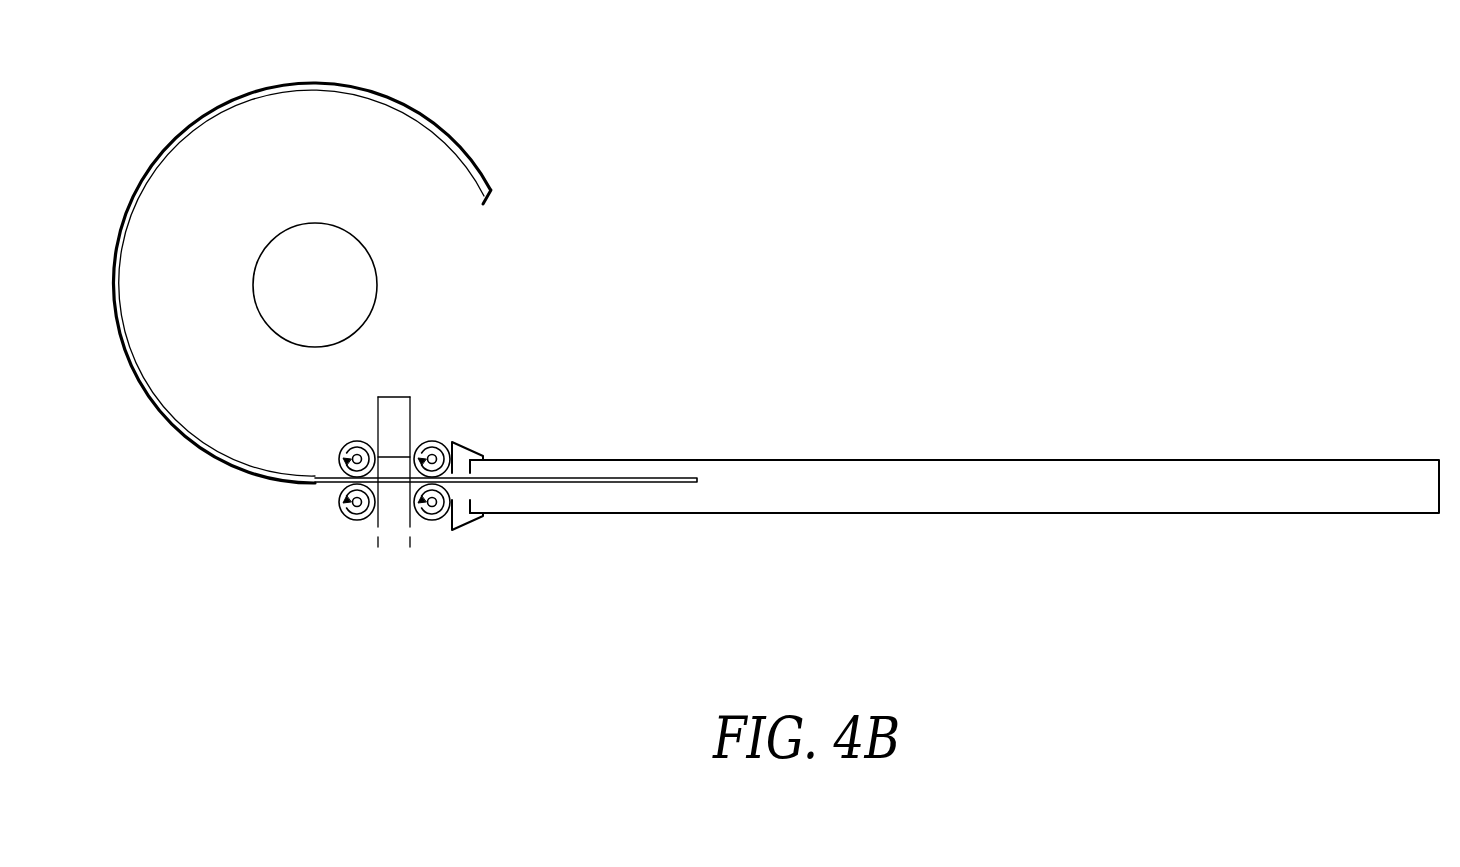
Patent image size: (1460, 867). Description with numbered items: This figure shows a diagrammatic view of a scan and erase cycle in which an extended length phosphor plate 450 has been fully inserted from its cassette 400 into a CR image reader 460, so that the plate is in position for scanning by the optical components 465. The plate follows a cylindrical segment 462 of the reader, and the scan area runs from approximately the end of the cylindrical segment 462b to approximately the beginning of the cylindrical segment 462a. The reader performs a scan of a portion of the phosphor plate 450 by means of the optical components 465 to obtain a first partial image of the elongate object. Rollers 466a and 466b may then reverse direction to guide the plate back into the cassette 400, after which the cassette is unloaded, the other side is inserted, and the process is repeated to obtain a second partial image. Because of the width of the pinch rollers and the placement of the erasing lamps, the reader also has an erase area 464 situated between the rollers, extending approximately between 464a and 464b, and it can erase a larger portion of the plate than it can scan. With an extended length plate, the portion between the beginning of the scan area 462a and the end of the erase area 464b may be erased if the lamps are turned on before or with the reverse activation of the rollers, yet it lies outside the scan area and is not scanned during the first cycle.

The cassette 400 is at (903, 460).
The extended length phosphor plate 450 is at (137, 338).
The CR image reader 460 is at (206, 105).
The cylindrical segment 462 is at (412, 102).
The beginning of cylindrical segment 462a is at (314, 485).
The end of cylindrical segment 462b is at (488, 178).
The erase area 464 is at (396, 397).
The erase area boundary 464a is at (379, 545).
The end of erase area 464b is at (409, 545).
The optical components 465 is at (338, 224).
The rollers 466a is at (339, 460).
The rollers 466b is at (437, 441).